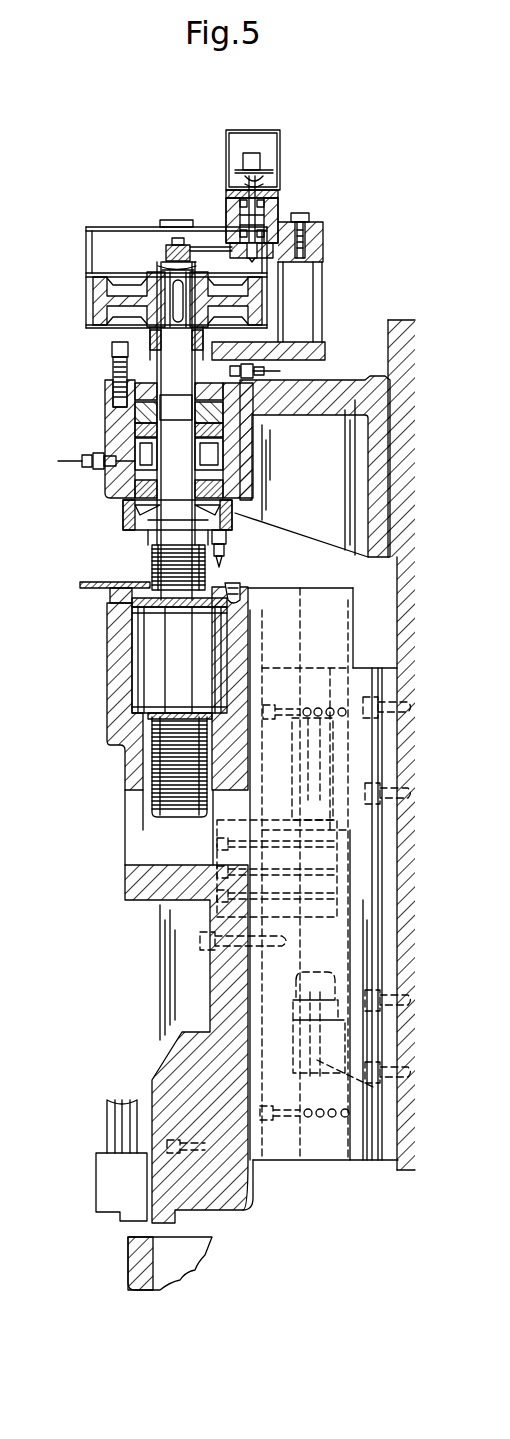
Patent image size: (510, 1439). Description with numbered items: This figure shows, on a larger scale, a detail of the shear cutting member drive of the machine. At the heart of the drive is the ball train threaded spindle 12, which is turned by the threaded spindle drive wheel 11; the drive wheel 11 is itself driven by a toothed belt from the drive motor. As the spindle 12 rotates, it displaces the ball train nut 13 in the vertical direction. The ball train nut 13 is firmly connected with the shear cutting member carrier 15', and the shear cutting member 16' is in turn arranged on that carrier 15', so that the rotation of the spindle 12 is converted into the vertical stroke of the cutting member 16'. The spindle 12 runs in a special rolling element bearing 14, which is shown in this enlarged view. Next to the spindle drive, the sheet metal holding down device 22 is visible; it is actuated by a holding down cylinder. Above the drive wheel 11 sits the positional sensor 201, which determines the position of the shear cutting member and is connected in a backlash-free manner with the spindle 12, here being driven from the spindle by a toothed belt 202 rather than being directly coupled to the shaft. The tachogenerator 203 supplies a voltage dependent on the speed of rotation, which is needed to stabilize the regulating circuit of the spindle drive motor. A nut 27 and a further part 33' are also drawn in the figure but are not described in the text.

The positional sensor 201 is at (272, 150).
The toothed belt 202 is at (218, 247).
The tachogenerator 203 is at (283, 218).
The nut 27 is at (168, 251).
The threaded spindle drive wheel 11 is at (103, 302).
The rolling element bearing 14 is at (122, 470).
The ball train threaded spindle 12 is at (162, 565).
The ball train nut 13 is at (158, 692).
The shear cutting member carrier 15' is at (154, 723).
The shear cutting member 16' is at (112, 1126).
The sheet metal holding down device 22 is at (108, 1175).
The bracket 33' is at (148, 1263).